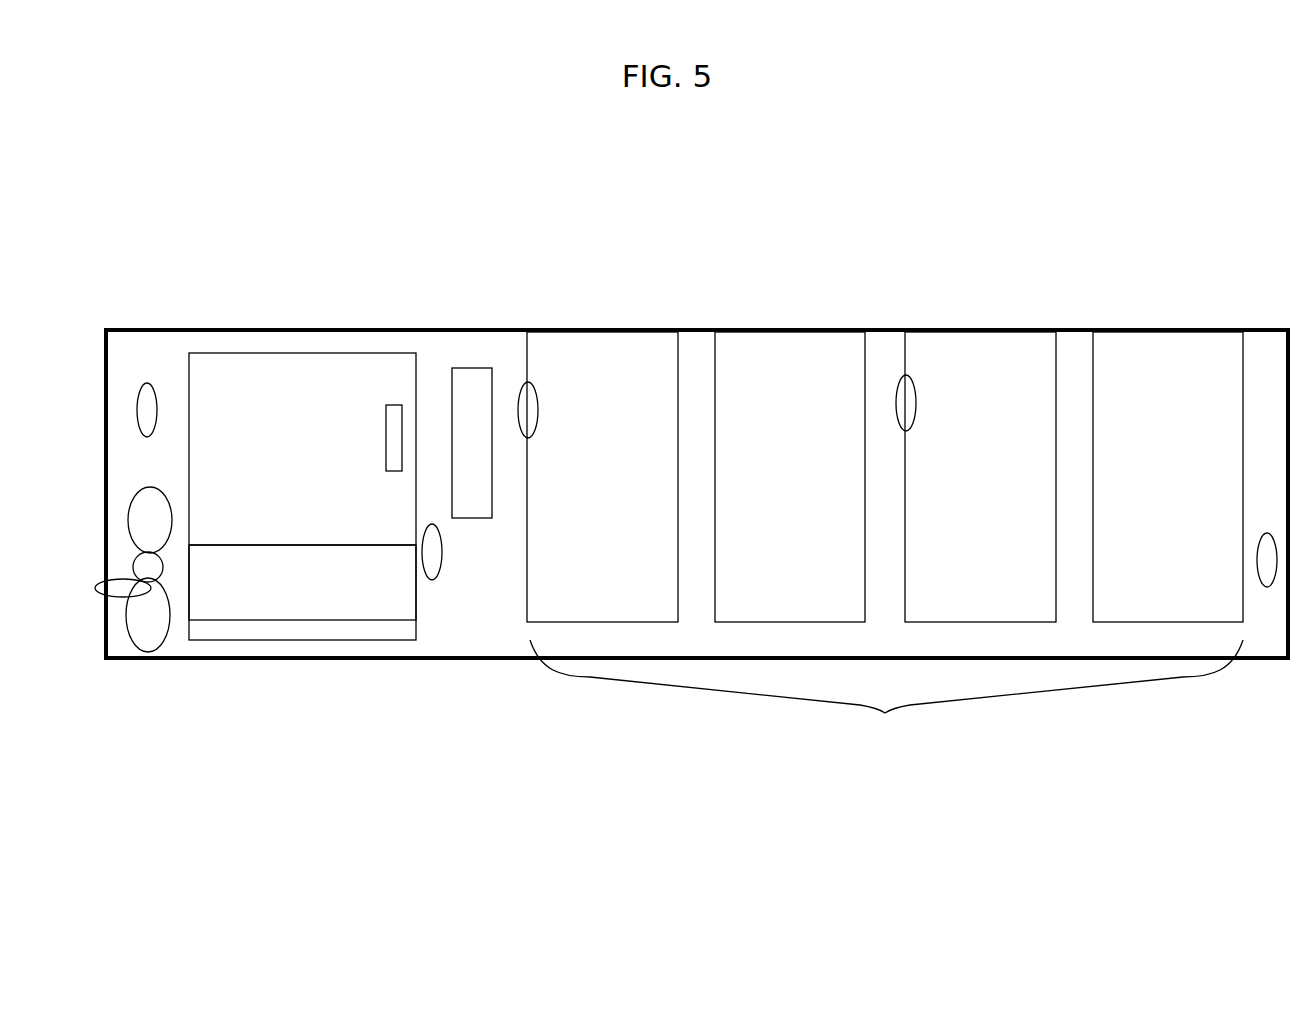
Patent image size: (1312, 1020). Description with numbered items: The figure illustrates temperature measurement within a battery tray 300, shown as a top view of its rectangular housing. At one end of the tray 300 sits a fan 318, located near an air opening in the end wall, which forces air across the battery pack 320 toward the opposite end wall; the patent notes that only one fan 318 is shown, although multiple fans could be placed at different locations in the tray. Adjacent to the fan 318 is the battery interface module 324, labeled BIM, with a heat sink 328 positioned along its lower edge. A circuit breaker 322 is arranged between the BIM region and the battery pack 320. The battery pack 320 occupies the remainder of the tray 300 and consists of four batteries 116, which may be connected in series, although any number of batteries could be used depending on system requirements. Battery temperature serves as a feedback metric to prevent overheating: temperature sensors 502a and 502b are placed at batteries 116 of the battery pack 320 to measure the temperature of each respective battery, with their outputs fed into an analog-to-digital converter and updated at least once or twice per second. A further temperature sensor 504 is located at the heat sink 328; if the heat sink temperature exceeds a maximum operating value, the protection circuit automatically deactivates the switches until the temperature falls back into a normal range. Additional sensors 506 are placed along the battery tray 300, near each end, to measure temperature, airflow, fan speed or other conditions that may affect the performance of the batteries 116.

The batteries 116 is at (602, 330).
The battery tray 300 is at (697, 780).
The fan 318 is at (143, 652).
The battery pack 320 is at (886, 701).
The circuit breaker 322 is at (455, 368).
The battery interface module 324 is at (313, 353).
The heat sink 328 is at (295, 623).
The temperature sensor 502a is at (528, 382).
The temperature sensor 502b is at (906, 375).
The temperature sensor 504 is at (432, 580).
The sensors 506 is at (150, 384).